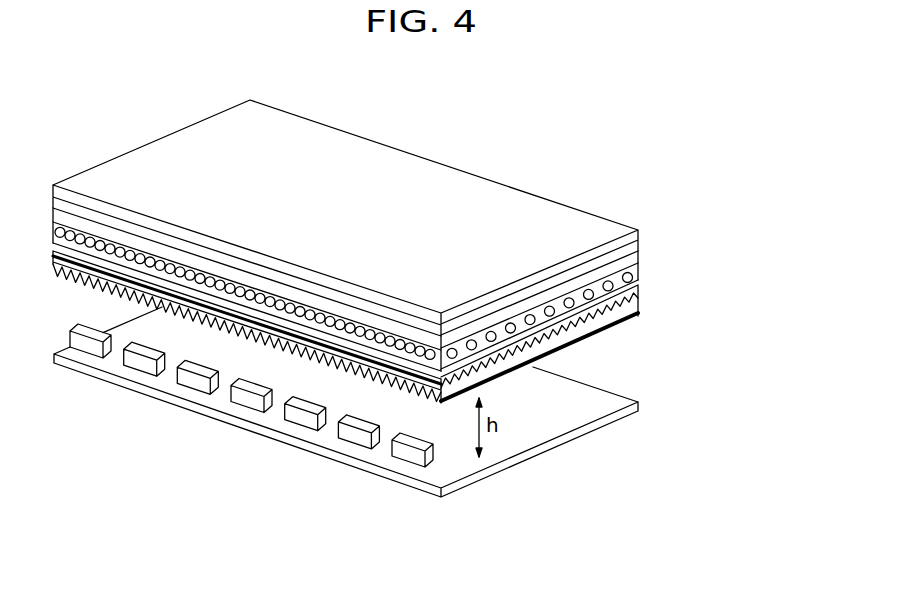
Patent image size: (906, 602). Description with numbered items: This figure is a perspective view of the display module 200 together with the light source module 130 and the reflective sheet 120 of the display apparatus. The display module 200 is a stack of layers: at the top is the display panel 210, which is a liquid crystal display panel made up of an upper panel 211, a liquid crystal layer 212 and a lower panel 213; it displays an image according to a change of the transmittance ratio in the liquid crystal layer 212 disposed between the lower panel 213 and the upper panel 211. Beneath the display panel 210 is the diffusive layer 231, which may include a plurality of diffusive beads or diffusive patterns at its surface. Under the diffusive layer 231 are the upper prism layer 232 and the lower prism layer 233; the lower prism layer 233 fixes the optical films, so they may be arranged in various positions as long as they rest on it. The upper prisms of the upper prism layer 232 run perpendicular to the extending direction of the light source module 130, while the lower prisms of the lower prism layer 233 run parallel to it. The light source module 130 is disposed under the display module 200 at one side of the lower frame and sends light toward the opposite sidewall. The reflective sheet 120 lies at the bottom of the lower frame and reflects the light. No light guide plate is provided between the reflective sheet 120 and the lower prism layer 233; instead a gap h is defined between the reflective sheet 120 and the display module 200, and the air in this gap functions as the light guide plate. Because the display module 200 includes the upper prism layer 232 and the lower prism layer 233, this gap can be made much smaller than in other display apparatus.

The display module 200 is at (426, 251).
The display panel 210 is at (403, 235).
The upper panel 211 is at (638, 235).
The liquid crystal layer 212 is at (638, 250).
The lower panel 213 is at (638, 262).
The diffusive layer 231 is at (638, 280).
The upper prism layer 232 is at (638, 297).
The lower prism layer 233 is at (638, 314).
The light source module 130 is at (410, 457).
The reflective sheet 120 is at (457, 455).